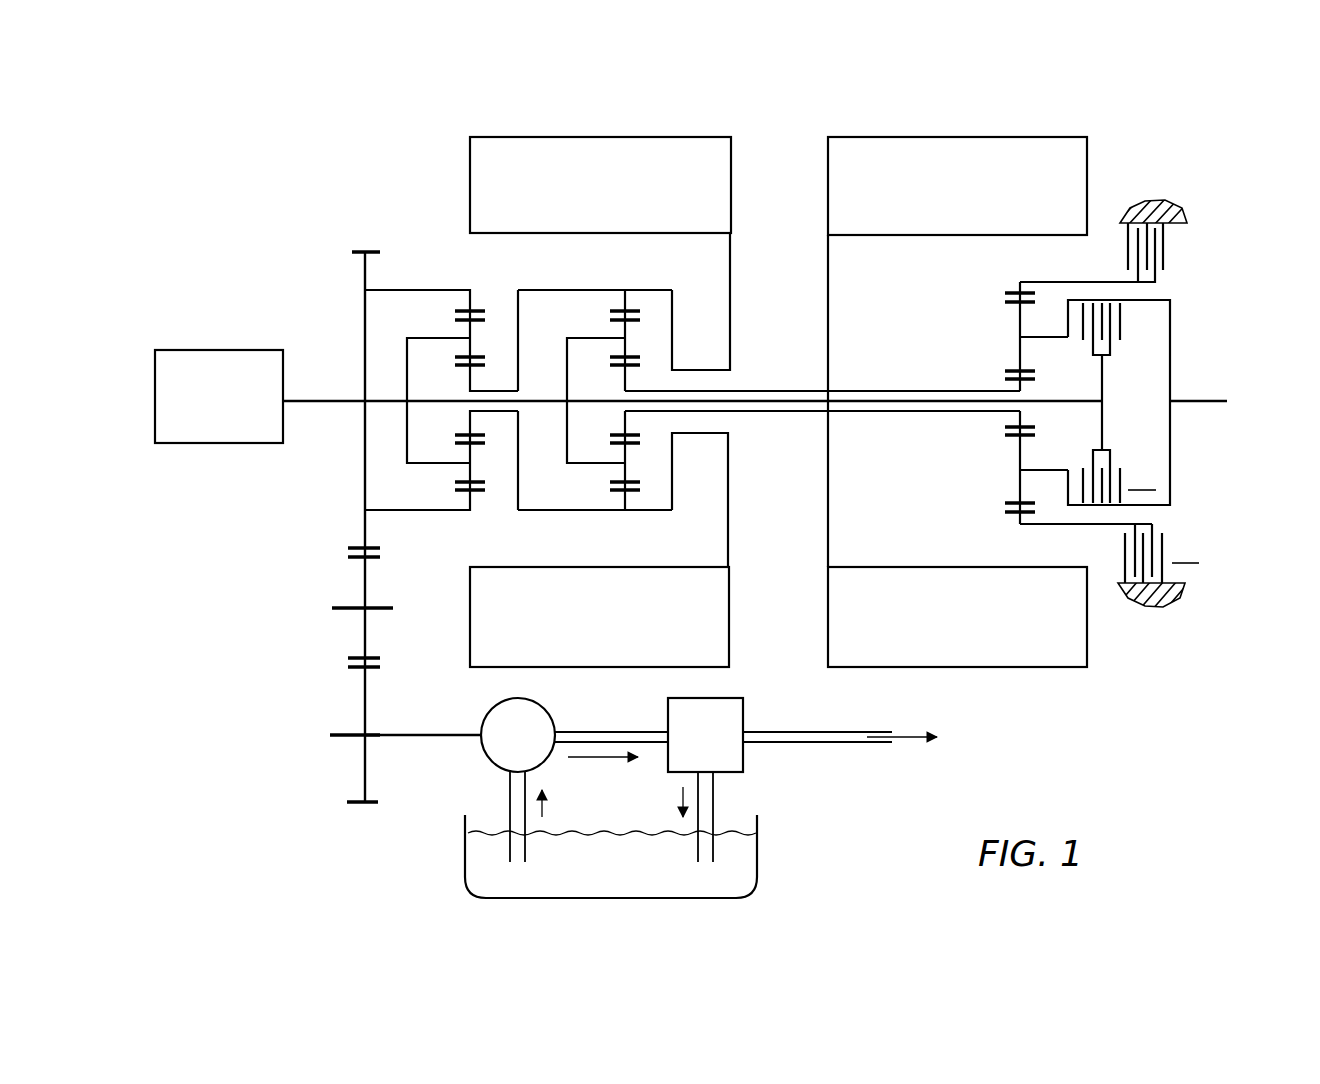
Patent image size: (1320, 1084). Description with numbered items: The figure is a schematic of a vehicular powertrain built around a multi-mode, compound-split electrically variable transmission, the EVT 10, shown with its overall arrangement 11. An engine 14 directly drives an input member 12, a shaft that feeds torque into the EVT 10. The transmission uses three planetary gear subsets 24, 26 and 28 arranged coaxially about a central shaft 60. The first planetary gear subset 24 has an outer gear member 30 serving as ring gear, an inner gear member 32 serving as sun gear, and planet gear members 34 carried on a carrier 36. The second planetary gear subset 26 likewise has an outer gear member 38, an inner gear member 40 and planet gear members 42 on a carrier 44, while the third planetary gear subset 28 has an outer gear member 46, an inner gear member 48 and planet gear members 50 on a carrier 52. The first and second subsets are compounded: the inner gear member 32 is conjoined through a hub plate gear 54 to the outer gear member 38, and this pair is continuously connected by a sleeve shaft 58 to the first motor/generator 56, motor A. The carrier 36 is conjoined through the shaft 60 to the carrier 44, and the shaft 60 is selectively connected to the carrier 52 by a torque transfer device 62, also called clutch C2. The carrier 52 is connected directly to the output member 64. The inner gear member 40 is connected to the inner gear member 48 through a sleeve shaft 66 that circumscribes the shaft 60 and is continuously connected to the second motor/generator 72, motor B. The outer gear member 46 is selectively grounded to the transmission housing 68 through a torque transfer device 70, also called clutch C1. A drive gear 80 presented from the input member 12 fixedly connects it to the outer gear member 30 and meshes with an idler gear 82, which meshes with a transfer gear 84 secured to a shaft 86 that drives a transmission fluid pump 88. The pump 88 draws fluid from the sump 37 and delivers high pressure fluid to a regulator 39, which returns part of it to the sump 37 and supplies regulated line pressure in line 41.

The electrically variable transmission 10 is at (777, 127).
The electrically variable transmission / drive unit 11 is at (326, 290).
The input member 12 is at (317, 398).
The engine 14 is at (233, 409).
The first planetary gear subset 24 is at (437, 284).
The second planetary gear subset 26 is at (633, 299).
The third planetary gear subset 28 is at (967, 315).
The outer gear member 30 is at (473, 310).
The inner gear member 32 is at (480, 378).
The planet gear members 34 is at (469, 331).
The carrier 36 is at (405, 421).
The sump 37 is at (757, 848).
The outer gear member 38 is at (620, 302).
The regulator 39 is at (743, 758).
The inner gear member 40 is at (620, 428).
The line 41 is at (847, 745).
The planet gear members 42 is at (627, 347).
The carrier 44 is at (562, 445).
The outer gear member 46 is at (1012, 285).
The inner gear member 48 is at (1028, 418).
The planet gear members 50 is at (1017, 360).
The carrier 52 is at (1167, 298).
The hub plate gear 54 is at (520, 337).
The first motor/generator 56 is at (616, 198).
The sleeve shaft 58 is at (710, 368).
The shaft 60 is at (770, 398).
The torque transfer device 62 is at (1130, 341).
The output member 64 is at (1193, 398).
The sleeve shaft 66 is at (850, 390).
The transmission housing 68 is at (1158, 203).
The torque transfer device 70 is at (1178, 245).
The second motor/generator 72 is at (945, 198).
The drive gear 80 is at (363, 452).
The idler gear 82 is at (362, 640).
The transfer gear 84 is at (362, 698).
The shaft 86 is at (380, 740).
The transmission fluid pump 88 is at (532, 717).
The first clutch C1 is at (1157, 567).
The second clutch C2 is at (1142, 479).